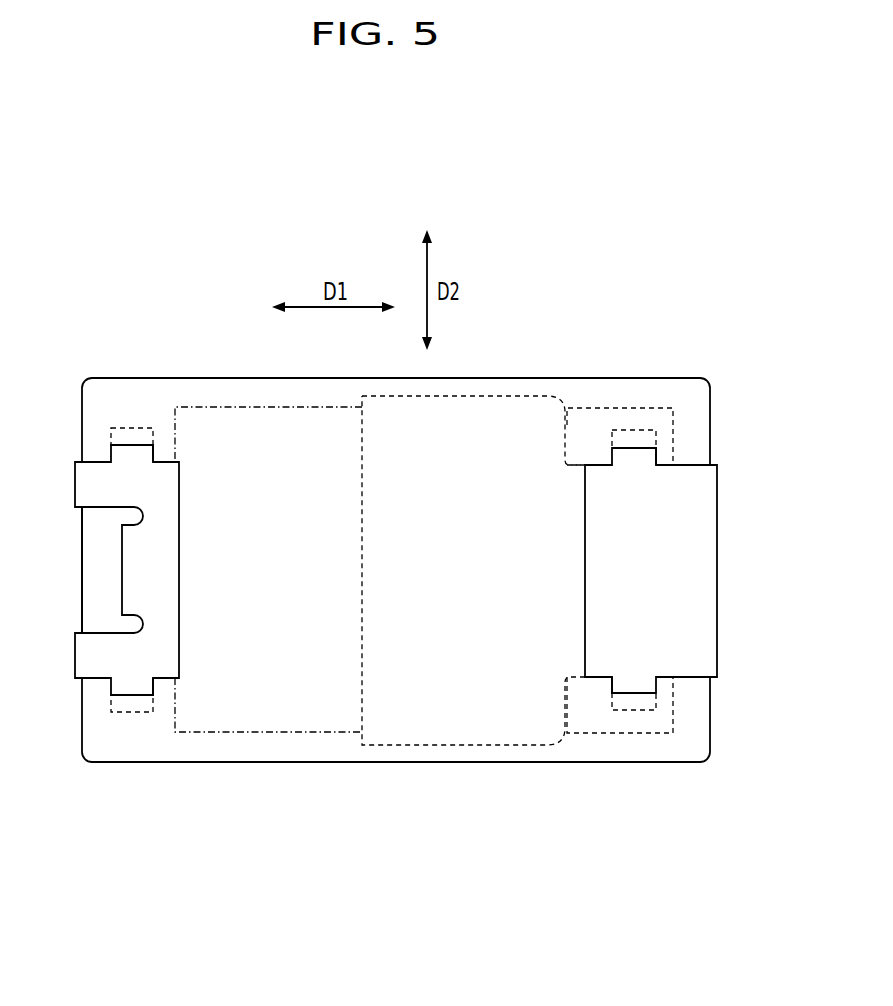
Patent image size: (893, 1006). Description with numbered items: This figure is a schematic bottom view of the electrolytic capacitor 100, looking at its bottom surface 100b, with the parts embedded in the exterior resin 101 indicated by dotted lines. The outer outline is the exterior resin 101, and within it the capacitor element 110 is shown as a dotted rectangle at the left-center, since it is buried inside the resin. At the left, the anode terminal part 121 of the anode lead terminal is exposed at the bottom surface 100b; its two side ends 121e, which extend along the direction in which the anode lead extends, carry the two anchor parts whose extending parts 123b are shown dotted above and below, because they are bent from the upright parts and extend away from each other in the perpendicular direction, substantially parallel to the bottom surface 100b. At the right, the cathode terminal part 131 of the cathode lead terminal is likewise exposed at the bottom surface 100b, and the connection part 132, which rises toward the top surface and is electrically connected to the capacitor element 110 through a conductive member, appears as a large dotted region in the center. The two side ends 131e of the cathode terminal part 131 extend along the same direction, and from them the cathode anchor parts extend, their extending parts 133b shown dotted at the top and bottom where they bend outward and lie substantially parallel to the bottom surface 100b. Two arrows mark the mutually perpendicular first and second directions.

The electrolytic capacitor 100 is at (90, 288).
The exterior resin 101 is at (700, 402).
The bottom surface 100b is at (300, 746).
The capacitor element 110 is at (258, 407).
The anode terminal part 121 is at (100, 488).
The side end 121e is at (165, 462).
The extending part 123b is at (121, 428).
The cathode terminal part 131 is at (697, 574).
The side end 131e is at (594, 463).
The connection part 132 is at (488, 396).
The extending part 133b is at (637, 430).